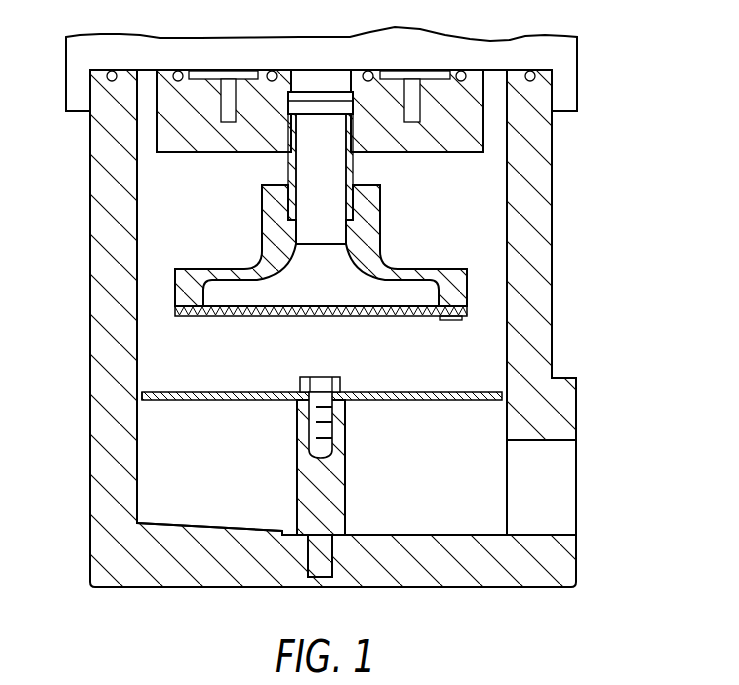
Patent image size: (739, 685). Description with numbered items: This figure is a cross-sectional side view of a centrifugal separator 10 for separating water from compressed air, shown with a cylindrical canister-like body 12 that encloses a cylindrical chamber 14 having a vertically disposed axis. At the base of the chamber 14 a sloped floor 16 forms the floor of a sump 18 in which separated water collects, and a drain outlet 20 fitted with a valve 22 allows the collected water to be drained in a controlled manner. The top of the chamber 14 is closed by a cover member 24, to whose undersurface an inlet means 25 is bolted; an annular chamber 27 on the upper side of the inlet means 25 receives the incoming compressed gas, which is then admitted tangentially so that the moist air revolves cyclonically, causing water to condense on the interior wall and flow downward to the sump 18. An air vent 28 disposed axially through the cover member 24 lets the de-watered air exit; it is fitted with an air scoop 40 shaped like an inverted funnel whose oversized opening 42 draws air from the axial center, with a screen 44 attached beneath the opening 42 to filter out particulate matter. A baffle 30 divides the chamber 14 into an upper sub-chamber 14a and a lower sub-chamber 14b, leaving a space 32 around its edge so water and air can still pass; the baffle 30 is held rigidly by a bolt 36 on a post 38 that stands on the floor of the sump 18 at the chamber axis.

The centrifugal separator 10 is at (598, 217).
The cylindrical canister-like body 12 is at (100, 232).
The cylindrical chamber 14 is at (147, 337).
The upper sub-chamber 14a is at (468, 370).
The lower sub-chamber 14b is at (468, 478).
The sloped floor 16 is at (221, 528).
The sump 18 is at (464, 537).
The drain outlet 20 is at (566, 440).
The valve 22 is at (603, 503).
The cover member 24 is at (153, 48).
The inlet means 25 is at (222, 153).
The annular chamber 27 is at (427, 73).
The air vent 28 is at (357, 165).
The baffle 30 is at (228, 392).
The space 32 is at (141, 402).
The bolt 36 is at (321, 377).
The post 38 is at (304, 480).
The air scoop 40 is at (220, 275).
The opening 42 is at (257, 297).
The screen 44 is at (374, 316).